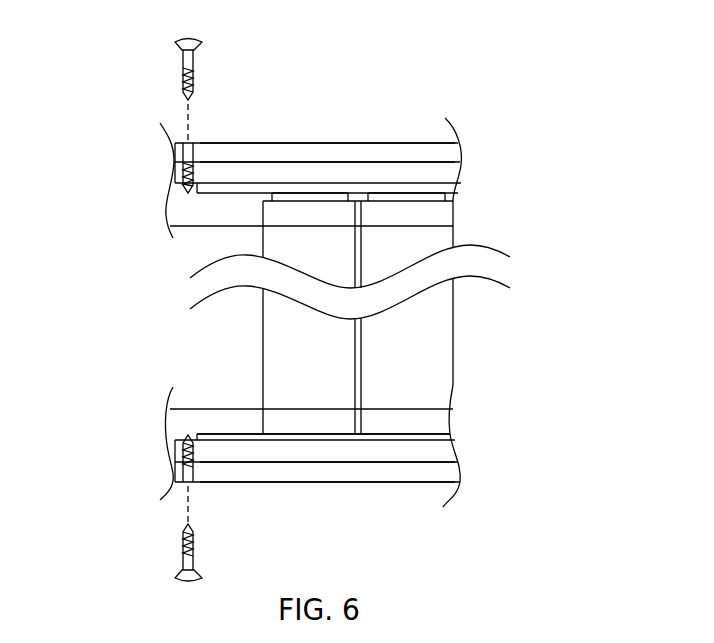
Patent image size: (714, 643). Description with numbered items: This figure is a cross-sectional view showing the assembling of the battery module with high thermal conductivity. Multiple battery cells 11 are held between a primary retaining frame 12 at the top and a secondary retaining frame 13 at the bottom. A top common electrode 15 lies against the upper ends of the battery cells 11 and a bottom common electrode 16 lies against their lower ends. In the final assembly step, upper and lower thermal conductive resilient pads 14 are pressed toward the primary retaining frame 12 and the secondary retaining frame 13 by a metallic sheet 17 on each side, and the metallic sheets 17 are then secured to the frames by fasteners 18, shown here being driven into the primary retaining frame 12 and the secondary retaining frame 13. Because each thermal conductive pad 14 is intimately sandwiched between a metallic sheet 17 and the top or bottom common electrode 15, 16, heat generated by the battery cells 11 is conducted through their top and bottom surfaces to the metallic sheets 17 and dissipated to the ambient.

The battery cell 11 is at (478, 344).
The primary retaining frame 12 is at (175, 201).
The secondary retaining frame 13 is at (175, 428).
The thermal conductive pad 14 is at (447, 175).
The top common electrode 15 is at (353, 185).
The bottom common electrode 16 is at (435, 439).
The metallic sheet 17 is at (448, 148).
The fastener 18 is at (182, 52).